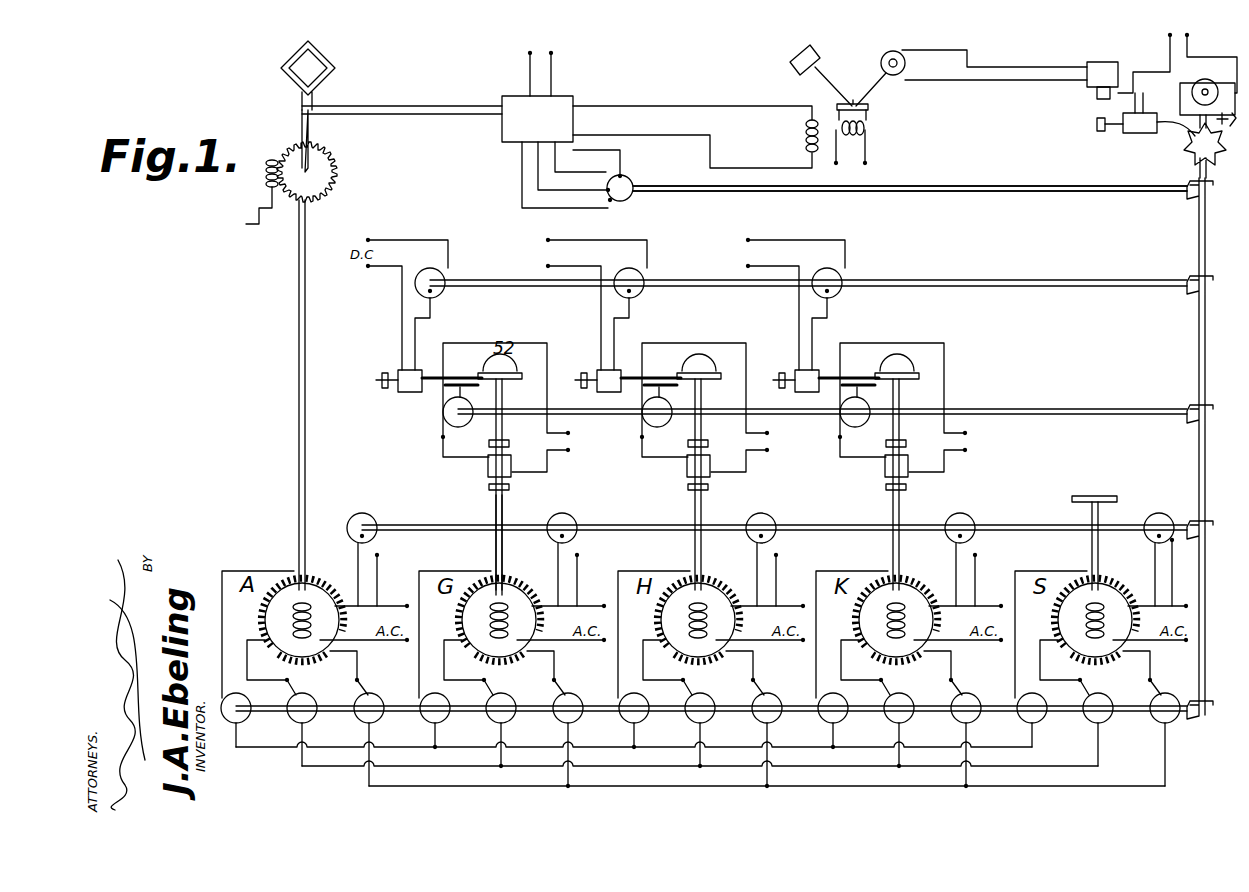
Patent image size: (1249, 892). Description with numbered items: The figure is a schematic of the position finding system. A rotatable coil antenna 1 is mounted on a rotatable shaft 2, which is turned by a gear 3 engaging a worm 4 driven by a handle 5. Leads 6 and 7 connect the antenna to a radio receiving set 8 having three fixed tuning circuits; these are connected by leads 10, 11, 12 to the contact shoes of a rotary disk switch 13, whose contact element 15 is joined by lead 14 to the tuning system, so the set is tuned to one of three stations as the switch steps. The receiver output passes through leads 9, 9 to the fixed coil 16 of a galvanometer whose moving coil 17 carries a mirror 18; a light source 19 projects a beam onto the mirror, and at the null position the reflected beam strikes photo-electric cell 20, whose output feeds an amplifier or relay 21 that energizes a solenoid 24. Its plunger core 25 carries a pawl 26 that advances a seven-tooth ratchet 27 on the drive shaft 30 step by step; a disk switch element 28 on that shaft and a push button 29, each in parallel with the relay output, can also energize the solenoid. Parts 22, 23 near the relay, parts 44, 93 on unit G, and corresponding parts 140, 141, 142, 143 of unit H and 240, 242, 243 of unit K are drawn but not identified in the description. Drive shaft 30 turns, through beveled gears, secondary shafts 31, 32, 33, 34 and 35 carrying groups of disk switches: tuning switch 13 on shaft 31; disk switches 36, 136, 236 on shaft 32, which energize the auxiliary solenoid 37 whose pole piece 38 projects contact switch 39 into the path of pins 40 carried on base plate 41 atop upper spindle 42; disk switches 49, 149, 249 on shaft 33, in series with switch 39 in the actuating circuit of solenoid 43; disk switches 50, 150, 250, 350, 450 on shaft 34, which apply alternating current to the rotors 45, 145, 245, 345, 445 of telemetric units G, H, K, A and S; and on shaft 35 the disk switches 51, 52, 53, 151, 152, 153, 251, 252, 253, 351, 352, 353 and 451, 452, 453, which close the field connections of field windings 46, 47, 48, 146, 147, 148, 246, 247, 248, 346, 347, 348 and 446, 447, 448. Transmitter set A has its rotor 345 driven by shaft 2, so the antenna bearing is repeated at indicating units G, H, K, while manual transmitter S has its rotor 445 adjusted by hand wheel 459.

The coil antenna 1 is at (326, 64).
The rotatable shaft 2 is at (312, 232).
The gear 3 is at (338, 170).
The worm 4 is at (266, 178).
The handle 5 is at (262, 226).
The lead 6 is at (390, 106).
The lead 7 is at (394, 114).
The radio receiving set 8 is at (502, 128).
The output leads 9 is at (618, 106).
The lead 10 is at (560, 166).
The lead 11 is at (538, 186).
The lead 12 is at (520, 180).
The rotary disk switch 13 is at (630, 198).
The lead 14 is at (625, 160).
The contact element 15 is at (632, 182).
The fixed coil 16 is at (806, 135).
The moving coil 17 is at (868, 126).
The mirror 18 is at (868, 108).
The light source 19 is at (812, 53).
The photo-electric cell 20 is at (907, 66).
The amplifier or relay 21 is at (1100, 62).
The terminal 22 is at (1097, 94).
The conductor 23 is at (1097, 103).
The solenoid 24 is at (1135, 133).
The plunger core 25 is at (1098, 130).
The pawl 26 is at (1180, 133).
The ratchet 27 is at (1192, 162).
The disk switch element 28 is at (1206, 79).
The push button 29 is at (1230, 130).
The drive shaft 30 is at (1198, 226).
The secondary shaft 31 is at (1060, 192).
The secondary shaft 32 is at (1095, 280).
The secondary shaft 33 is at (1090, 408).
The supplementary shaft 34 is at (1020, 525).
The supplementary shaft 35 is at (1121, 714).
The rotary disk switch 36 is at (440, 293).
The auxiliary solenoid 37 is at (408, 392).
The solenoid pole piece 38 is at (382, 386).
The contact switch 39 is at (460, 376).
The pins 40 is at (516, 380).
The base plate 41 is at (513, 370).
The upper spindle 42 is at (505, 435).
The solenoid 43 is at (488, 468).
The shaft 44 is at (504, 592).
The rotor winding 45 is at (490, 622).
The field winding 46 is at (462, 612).
The field winding 47 is at (530, 596).
The field winding 48 is at (480, 658).
The disk switch 49 is at (458, 427).
The disk switch 50 is at (569, 518).
The disk switch 51 is at (446, 694).
The disk switch 52 is at (508, 698).
The disk switch 53 is at (576, 698).
The shaft 93 is at (496, 512).
The disk switch 136 is at (639, 293).
The frame 140 is at (715, 380).
The cap 141 is at (712, 370).
The shaft 142 is at (704, 435).
The coupling 143 is at (687, 468).
The rotor winding 145 is at (690, 630).
The field winding 146 is at (661, 608).
The field winding 147 is at (729, 596).
The field winding 148 is at (722, 658).
The disk switch 149 is at (657, 427).
The disk switch 150 is at (768, 518).
The disk switch 151 is at (645, 694).
The disk switch 152 is at (707, 698).
The disk switch 153 is at (775, 698).
The disk switch 236 is at (837, 293).
The frame 240 is at (913, 380).
The shaft 242 is at (902, 435).
The coupling 243 is at (885, 468).
The rotor winding 245 is at (888, 630).
The field winding 246 is at (859, 608).
The field winding 247 is at (927, 596).
The field winding 248 is at (920, 658).
The disk switch 249 is at (855, 427).
The disk switch 250 is at (967, 518).
The disk switch 251 is at (844, 694).
The disk switch 252 is at (906, 698).
The disk switch 253 is at (974, 698).
The rotor 345 is at (293, 630).
The field winding 346 is at (262, 606).
The field winding 347 is at (325, 594).
The field winding 348 is at (325, 658).
The disk switch 350 is at (369, 518).
The disk switch 351 is at (247, 694).
The disk switch 352 is at (308, 698).
The disk switch 353 is at (376, 698).
The rotor 445 is at (1088, 630).
The field winding 446 is at (1058, 608).
The field winding 447 is at (1126, 588).
The field winding 448 is at (1140, 650).
The disk switch 450 is at (1160, 510).
The disk switch 451 is at (1043, 694).
The disk switch 452 is at (1104, 698).
The disk switch 453 is at (1176, 694).
The hand wheel 459 is at (1105, 495).